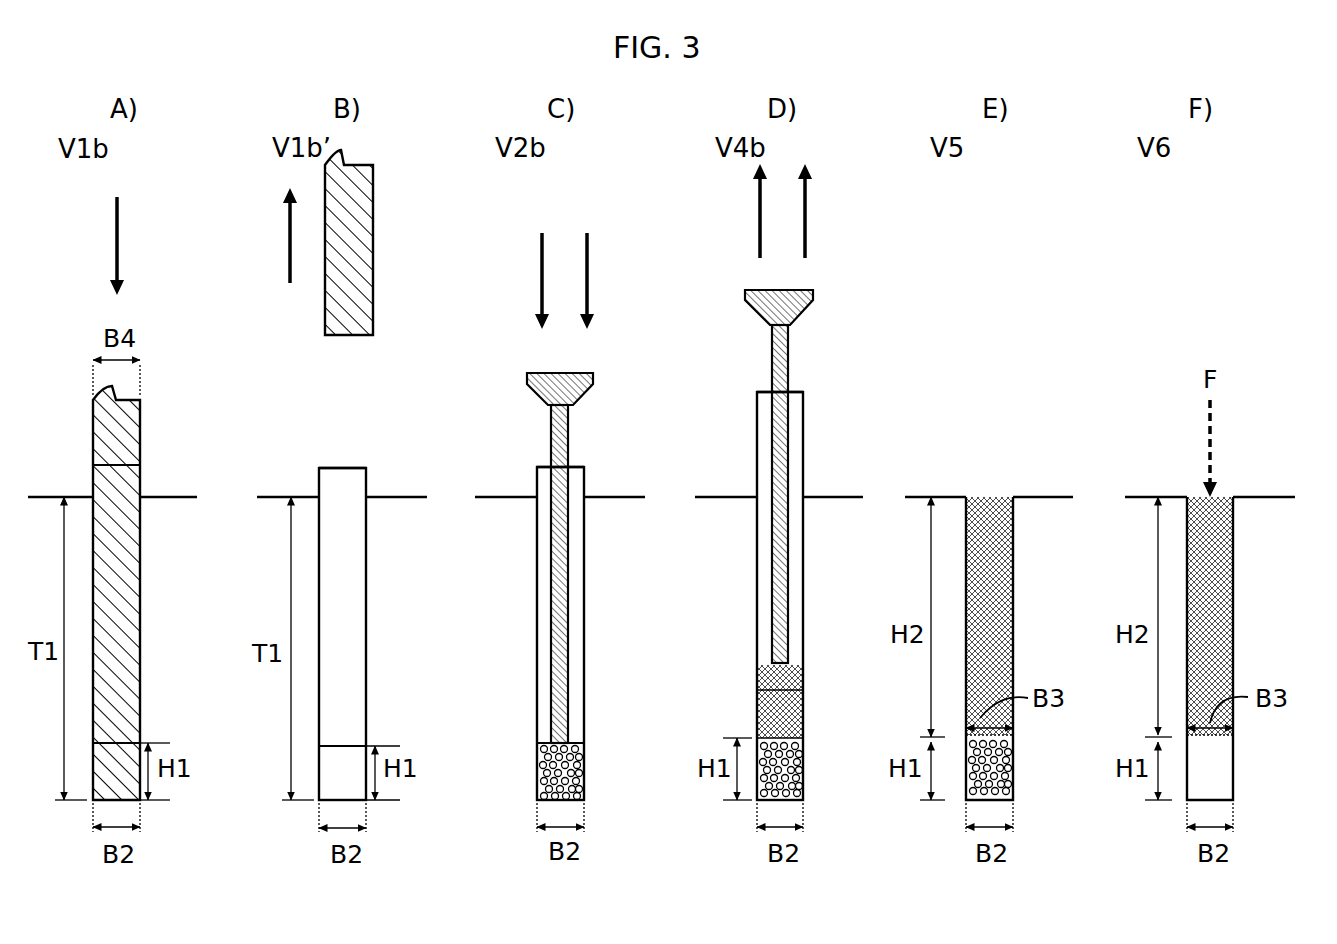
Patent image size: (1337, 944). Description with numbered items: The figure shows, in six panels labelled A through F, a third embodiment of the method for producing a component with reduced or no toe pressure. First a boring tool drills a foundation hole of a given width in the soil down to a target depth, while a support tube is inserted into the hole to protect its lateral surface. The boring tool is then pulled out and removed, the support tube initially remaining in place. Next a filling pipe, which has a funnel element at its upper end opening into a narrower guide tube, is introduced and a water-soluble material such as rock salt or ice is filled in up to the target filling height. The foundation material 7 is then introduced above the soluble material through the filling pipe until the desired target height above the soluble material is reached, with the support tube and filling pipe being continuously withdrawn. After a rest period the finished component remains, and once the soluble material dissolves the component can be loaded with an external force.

The foundation material 7 is at (769, 712).